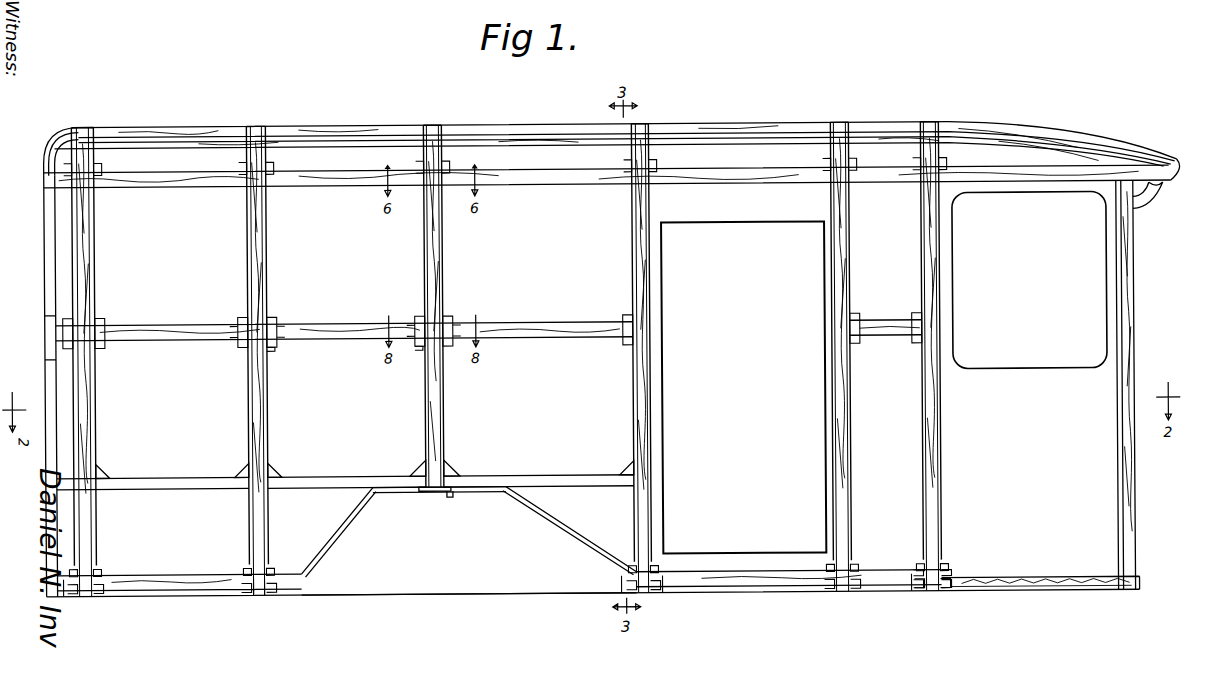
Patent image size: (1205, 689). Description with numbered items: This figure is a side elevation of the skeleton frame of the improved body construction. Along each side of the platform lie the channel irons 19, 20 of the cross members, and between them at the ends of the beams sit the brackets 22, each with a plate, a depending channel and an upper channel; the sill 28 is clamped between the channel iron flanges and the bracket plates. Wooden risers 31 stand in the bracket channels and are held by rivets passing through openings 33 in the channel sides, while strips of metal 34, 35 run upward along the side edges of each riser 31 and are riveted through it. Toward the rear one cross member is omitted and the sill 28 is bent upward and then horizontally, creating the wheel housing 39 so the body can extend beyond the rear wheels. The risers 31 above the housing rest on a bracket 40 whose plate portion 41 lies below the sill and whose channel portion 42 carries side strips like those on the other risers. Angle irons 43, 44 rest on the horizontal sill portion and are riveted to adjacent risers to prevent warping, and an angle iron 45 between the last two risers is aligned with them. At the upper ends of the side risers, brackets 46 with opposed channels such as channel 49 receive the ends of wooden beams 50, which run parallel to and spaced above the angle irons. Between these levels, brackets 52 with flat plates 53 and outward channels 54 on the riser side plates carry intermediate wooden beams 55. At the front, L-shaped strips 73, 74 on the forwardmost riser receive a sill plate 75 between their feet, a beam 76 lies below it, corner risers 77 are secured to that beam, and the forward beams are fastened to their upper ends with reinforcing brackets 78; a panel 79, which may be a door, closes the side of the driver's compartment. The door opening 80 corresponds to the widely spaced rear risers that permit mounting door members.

The channel iron 19 is at (80, 592).
The channel iron 20 is at (102, 590).
The bracket 22 is at (92, 570).
The sill 28 is at (206, 574).
The riser 31 is at (90, 271).
The opening 33 is at (51, 386).
The strip of metal 34 is at (265, 287).
The strip of metal 35 is at (250, 289).
The wheel housing 39 is at (518, 572).
The bracket 40 is at (452, 496).
The plate portion 41 is at (412, 492).
The channel portion 42 is at (446, 466).
The angle iron 43 is at (542, 479).
The angle iron 44 is at (352, 479).
The angle iron 45 is at (186, 473).
The bracket 46 is at (268, 164).
The channel 49 is at (240, 172).
The beam 50 is at (196, 185).
The bracket 52 is at (272, 315).
The flat plate 53 is at (278, 326).
The channel 54 is at (276, 348).
The wooden beam 55 is at (338, 329).
The L-shaped strip 73 is at (948, 572).
The L-shaped strip 74 is at (950, 590).
The sill plate 75 is at (1040, 578).
The beam 76 is at (1028, 590).
The riser 77 is at (1118, 467).
The bracket 78 is at (1152, 192).
The panel 79 is at (1030, 373).
The door opening 80 is at (743, 387).